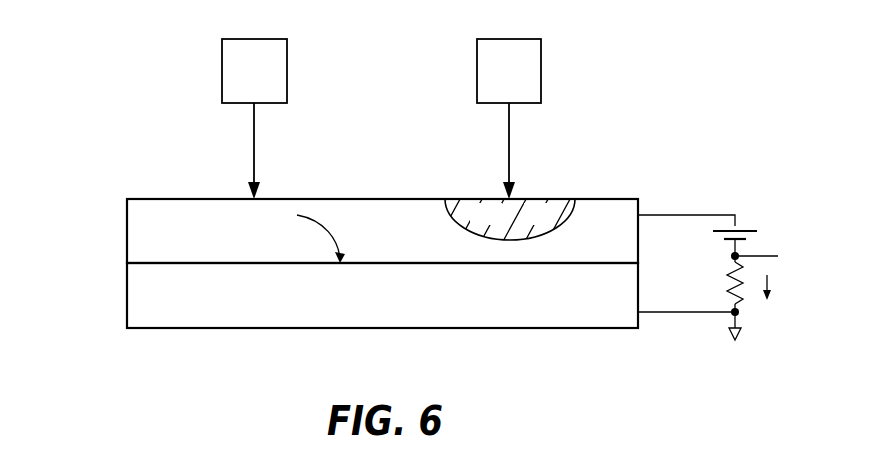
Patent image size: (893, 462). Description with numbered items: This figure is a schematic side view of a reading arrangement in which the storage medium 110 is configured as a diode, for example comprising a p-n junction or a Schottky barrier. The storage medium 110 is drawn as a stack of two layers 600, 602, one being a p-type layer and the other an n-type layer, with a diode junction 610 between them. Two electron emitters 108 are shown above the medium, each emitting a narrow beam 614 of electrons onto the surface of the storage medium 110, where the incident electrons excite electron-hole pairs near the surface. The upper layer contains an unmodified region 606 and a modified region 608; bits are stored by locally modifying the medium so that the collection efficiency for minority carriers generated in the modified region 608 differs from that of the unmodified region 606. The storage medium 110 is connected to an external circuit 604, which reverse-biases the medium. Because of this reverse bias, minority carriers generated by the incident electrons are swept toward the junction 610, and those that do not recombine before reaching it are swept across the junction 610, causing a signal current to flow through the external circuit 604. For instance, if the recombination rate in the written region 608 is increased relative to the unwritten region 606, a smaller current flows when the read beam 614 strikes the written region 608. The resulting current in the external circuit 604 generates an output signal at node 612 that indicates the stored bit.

The electron emitter 108 is at (268, 46).
The electron beam 614 is at (254, 153).
The first layer 600 is at (127, 231).
The second layer 602 is at (127, 295).
The unmodified region 606 is at (286, 199).
The modified region 608 is at (558, 199).
The diode junction 610 is at (247, 267).
The external circuit 604 is at (738, 216).
The node 612 is at (714, 257).
The storage medium 110 is at (512, 347).